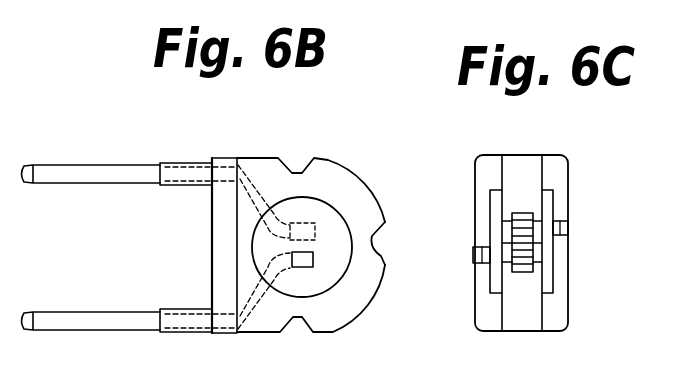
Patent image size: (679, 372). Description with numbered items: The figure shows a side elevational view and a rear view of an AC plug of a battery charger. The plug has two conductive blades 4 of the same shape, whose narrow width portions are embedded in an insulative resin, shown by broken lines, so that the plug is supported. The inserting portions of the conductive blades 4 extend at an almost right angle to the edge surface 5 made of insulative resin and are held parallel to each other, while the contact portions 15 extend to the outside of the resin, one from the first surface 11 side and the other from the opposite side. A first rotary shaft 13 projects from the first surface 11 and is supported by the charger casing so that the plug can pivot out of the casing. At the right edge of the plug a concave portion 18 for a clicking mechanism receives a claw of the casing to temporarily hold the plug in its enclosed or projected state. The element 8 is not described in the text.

In FIG. 6B, the conductive blades 4 is at (84, 176).
In FIG. 6B, the edge surface 5 is at (212, 257).
In FIG. 6C, the ribbed connecting member 8 is at (522, 246).
In FIG. 6B, the first surface 11 is at (333, 182).
In FIG. 6B, the first rotary shaft 13 is at (292, 207).
In FIG. 6B, the contact portions 15 is at (303, 258).
In FIG. 6C, the contact portions 15 is at (473, 255).
In FIG. 6B, the concave portion 18 is at (388, 237).